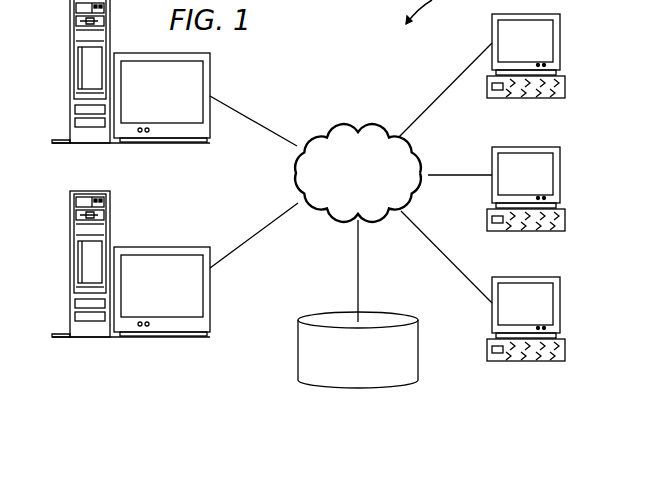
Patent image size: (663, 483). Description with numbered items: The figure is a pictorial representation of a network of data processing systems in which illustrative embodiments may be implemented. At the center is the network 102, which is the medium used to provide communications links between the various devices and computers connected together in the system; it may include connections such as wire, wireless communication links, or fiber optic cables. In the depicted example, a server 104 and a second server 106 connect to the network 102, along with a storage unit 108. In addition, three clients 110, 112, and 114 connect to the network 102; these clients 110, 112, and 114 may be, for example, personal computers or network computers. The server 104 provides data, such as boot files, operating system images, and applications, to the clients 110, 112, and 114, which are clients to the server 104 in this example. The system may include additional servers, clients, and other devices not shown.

The network 102 is at (331, 128).
The server 104 is at (70, 70).
The server 106 is at (70, 262).
The storage unit 108 is at (340, 391).
The client 110 is at (560, 28).
The client 112 is at (553, 201).
The client 114 is at (553, 331).